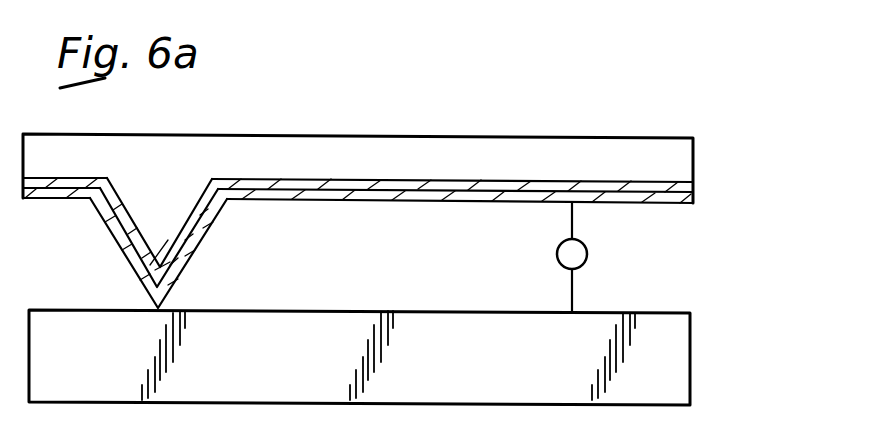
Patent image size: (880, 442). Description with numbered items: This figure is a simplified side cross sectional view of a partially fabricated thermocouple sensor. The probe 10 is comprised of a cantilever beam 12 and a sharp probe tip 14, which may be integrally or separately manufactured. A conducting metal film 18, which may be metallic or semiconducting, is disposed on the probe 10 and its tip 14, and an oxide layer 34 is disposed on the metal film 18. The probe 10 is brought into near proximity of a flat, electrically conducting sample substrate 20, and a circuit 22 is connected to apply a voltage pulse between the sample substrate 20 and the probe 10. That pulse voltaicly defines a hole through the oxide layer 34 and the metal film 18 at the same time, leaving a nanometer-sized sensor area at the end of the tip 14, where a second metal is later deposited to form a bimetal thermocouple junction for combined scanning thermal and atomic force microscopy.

The probe 10 is at (452, 98).
The cantilever beam 12 is at (643, 157).
The probe tip 14 is at (163, 237).
The metal film 18 is at (693, 186).
The sample substrate 20 is at (680, 377).
The circuit 22 is at (587, 254).
The oxide layer 34 is at (677, 206).